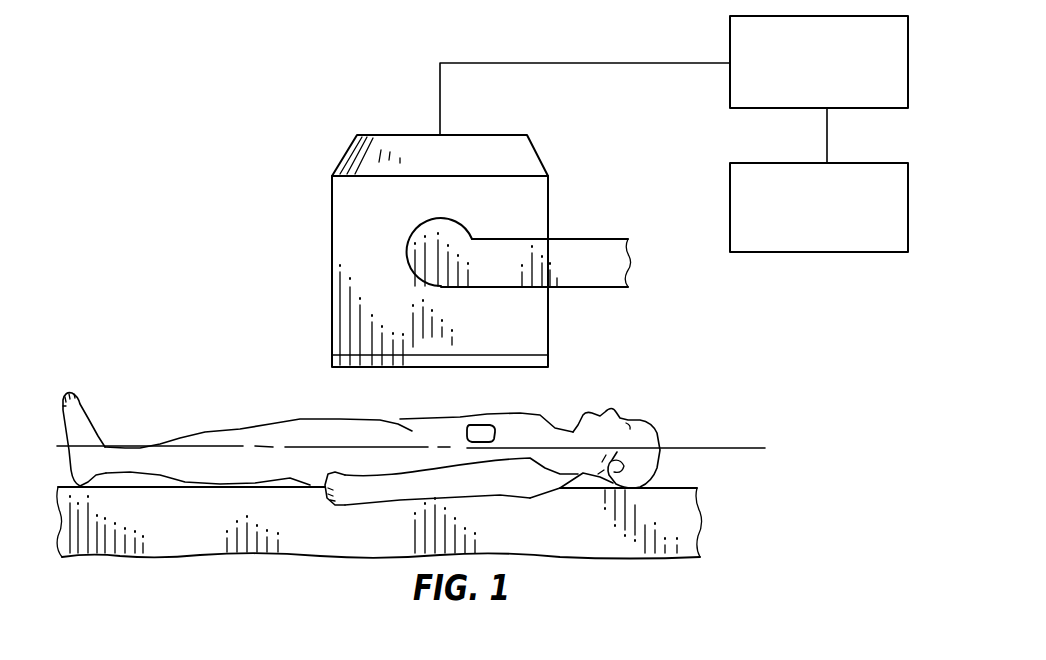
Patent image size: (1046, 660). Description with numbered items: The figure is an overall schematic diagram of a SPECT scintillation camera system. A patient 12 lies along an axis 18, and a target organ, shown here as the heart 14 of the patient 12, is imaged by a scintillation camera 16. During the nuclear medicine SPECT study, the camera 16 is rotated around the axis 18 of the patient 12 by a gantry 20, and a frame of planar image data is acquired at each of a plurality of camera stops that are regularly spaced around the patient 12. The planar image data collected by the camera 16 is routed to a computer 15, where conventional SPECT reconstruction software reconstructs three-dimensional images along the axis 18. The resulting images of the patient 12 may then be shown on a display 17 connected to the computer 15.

The patient 12 is at (240, 430).
The heart 14 is at (476, 425).
The computer 15 is at (730, 40).
The scintillation camera 16 is at (300, 226).
The display 17 is at (730, 177).
The axis 18 is at (714, 448).
The gantry 20 is at (588, 239).